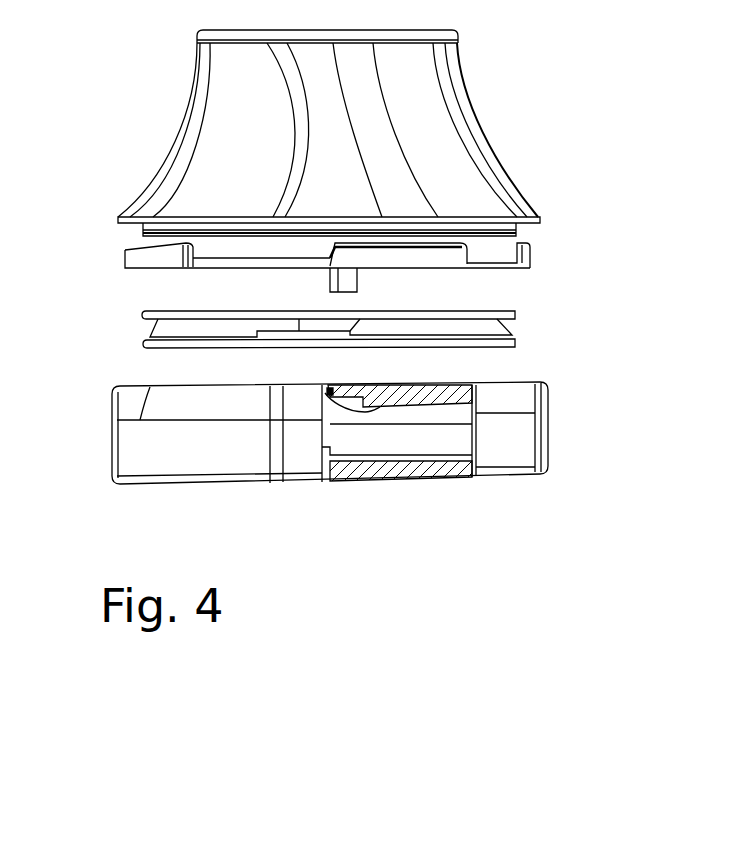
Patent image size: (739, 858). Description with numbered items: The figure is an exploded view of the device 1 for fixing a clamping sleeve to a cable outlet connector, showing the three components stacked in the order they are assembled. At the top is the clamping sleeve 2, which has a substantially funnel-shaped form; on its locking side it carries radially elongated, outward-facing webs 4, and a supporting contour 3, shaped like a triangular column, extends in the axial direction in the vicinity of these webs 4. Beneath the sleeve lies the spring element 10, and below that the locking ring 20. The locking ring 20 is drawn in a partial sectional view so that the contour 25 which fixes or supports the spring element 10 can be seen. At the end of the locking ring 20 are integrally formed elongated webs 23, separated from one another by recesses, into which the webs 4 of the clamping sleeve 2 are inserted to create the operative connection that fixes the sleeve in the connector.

The device 1 is at (516, 128).
The clamping sleeve 2 is at (247, 125).
The supporting contour 3 is at (345, 283).
The webs 4 is at (430, 253).
The spring element 10 is at (183, 331).
The locking ring 20 is at (182, 447).
The elongated webs 23 is at (470, 395).
The contour 25 is at (375, 406).